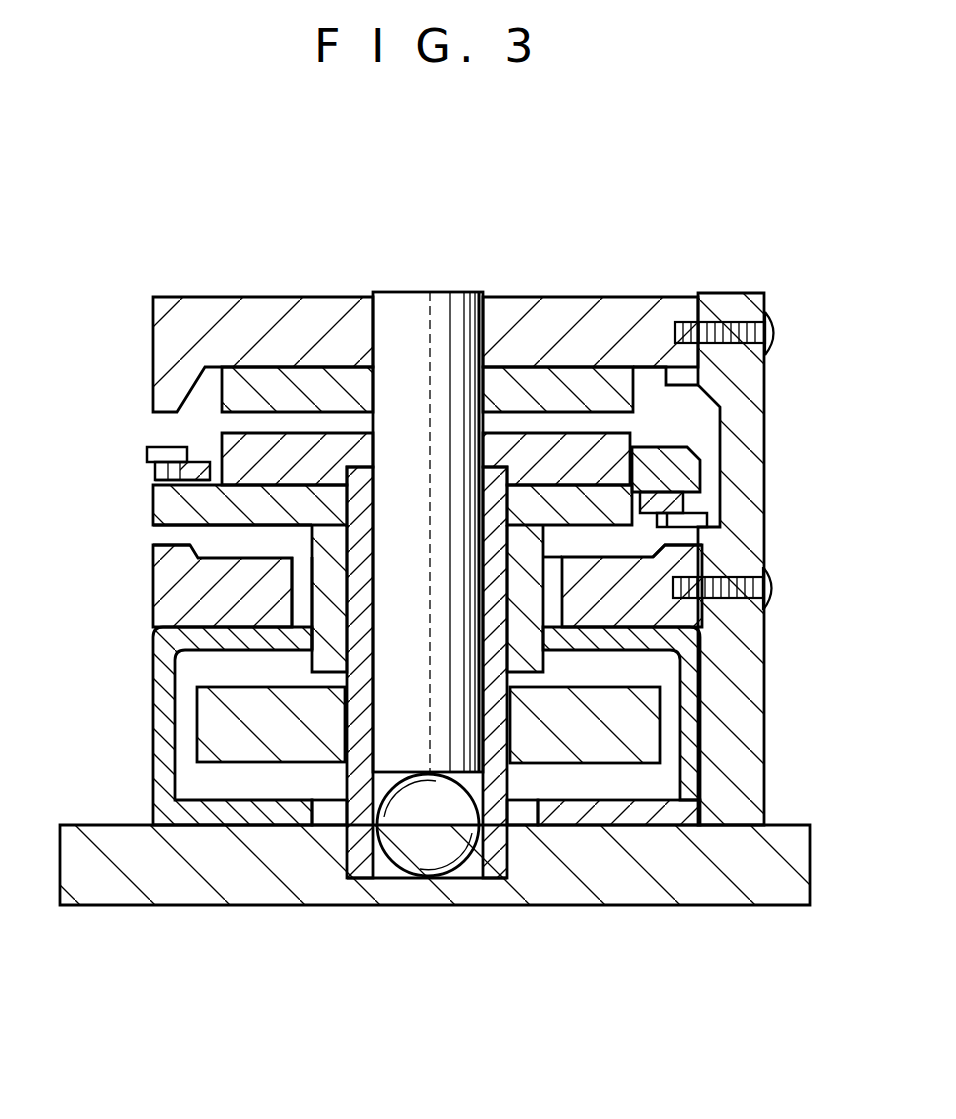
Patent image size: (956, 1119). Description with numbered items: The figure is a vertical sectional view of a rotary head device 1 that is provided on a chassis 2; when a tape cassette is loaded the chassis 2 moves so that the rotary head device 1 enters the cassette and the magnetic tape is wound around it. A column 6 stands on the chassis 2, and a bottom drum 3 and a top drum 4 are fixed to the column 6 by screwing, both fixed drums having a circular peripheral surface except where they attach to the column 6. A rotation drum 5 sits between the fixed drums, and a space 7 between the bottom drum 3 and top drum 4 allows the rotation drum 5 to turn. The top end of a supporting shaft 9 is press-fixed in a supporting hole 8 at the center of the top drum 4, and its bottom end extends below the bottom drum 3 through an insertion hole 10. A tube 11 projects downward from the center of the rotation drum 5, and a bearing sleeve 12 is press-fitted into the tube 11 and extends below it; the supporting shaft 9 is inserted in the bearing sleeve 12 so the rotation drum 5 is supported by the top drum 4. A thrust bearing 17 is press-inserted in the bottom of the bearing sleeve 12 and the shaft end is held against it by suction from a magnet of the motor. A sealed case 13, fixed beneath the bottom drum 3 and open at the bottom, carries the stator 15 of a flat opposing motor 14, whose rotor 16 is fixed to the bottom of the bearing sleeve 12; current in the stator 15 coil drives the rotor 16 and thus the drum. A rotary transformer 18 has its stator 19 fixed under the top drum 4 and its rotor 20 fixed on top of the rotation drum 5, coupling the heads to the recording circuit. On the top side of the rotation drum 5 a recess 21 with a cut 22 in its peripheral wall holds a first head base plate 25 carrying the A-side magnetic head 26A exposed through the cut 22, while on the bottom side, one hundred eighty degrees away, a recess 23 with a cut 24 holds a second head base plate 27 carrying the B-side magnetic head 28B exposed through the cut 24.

The rotary head device 1 is at (130, 238).
The chassis 2 is at (240, 897).
The bottom drum 3 is at (160, 612).
The top drum 4 is at (153, 322).
The rotation drum 5 is at (162, 510).
The column 6 is at (752, 410).
The space 7 is at (681, 427).
The supporting hole 8 is at (380, 322).
The supporting shaft 9 is at (458, 300).
The insertion hole 10 is at (310, 605).
The tube 11 is at (320, 583).
The bearing sleeve 12 is at (360, 867).
The sealed case 13 is at (158, 732).
The flat opposing motor 14 is at (826, 725).
The stator 15 is at (693, 812).
The rotor 16 is at (648, 738).
The thrust bearing 17 is at (461, 867).
The rotary transformer 18 is at (80, 367).
The stator 19 is at (228, 390).
The rotor 20 is at (222, 435).
The recess 21 is at (163, 485).
The cut 22 is at (157, 462).
The recess 23 is at (680, 488).
The cut 24 is at (687, 512).
The head base plate 25 is at (177, 530).
The magnetic head 26A is at (162, 438).
The second head base plate 27 is at (667, 550).
The magnetic head 28B is at (667, 530).